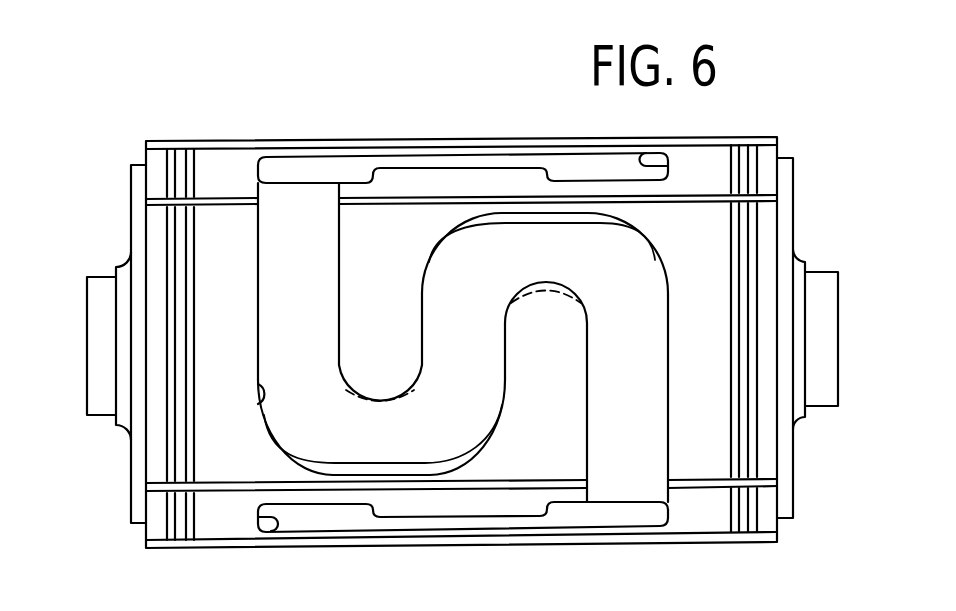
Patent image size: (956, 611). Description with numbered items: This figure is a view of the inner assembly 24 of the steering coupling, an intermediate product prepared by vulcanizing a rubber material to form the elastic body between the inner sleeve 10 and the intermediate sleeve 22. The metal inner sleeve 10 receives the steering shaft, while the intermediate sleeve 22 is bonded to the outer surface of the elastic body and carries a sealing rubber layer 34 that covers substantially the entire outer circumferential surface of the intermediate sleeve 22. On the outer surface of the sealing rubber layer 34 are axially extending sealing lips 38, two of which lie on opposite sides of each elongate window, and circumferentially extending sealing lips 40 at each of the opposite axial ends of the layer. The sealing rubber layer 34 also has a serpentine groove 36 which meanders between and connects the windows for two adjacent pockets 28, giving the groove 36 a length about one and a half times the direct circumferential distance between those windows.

The inner sleeve 10 is at (820, 283).
The intermediate sleeve 22 is at (139, 164).
The inner assembly 24 is at (772, 124).
The pocket 28 is at (636, 158).
The sealing rubber layer 34 is at (713, 518).
The serpentine groove 36 is at (262, 404).
The sealing lip 38 is at (254, 146).
The circumferentially extending sealing lip 40 is at (170, 220).